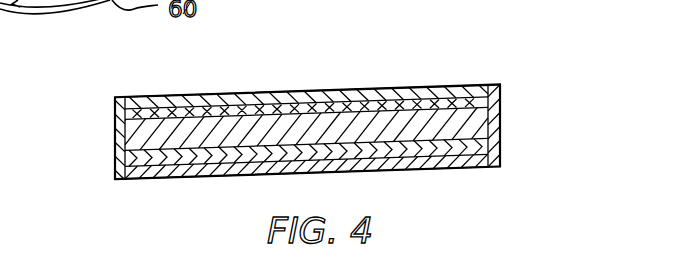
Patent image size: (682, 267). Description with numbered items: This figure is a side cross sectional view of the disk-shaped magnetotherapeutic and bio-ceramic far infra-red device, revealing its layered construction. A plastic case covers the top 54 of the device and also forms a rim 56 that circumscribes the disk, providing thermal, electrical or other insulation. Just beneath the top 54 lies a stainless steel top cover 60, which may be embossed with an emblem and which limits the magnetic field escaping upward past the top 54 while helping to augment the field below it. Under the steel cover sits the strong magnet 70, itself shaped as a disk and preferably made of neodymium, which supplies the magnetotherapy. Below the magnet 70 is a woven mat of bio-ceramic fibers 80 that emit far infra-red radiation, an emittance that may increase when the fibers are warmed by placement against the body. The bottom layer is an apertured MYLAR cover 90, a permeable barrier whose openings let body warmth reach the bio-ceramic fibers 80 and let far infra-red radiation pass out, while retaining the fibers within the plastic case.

The top 54 is at (330, 88).
The rim 56 is at (503, 94).
The stainless steel top cover 60 is at (162, 105).
The strong magnet 70 is at (118, 144).
The bio-ceramic fibers 80 is at (162, 162).
The apertured MYLAR cover 90 is at (460, 167).